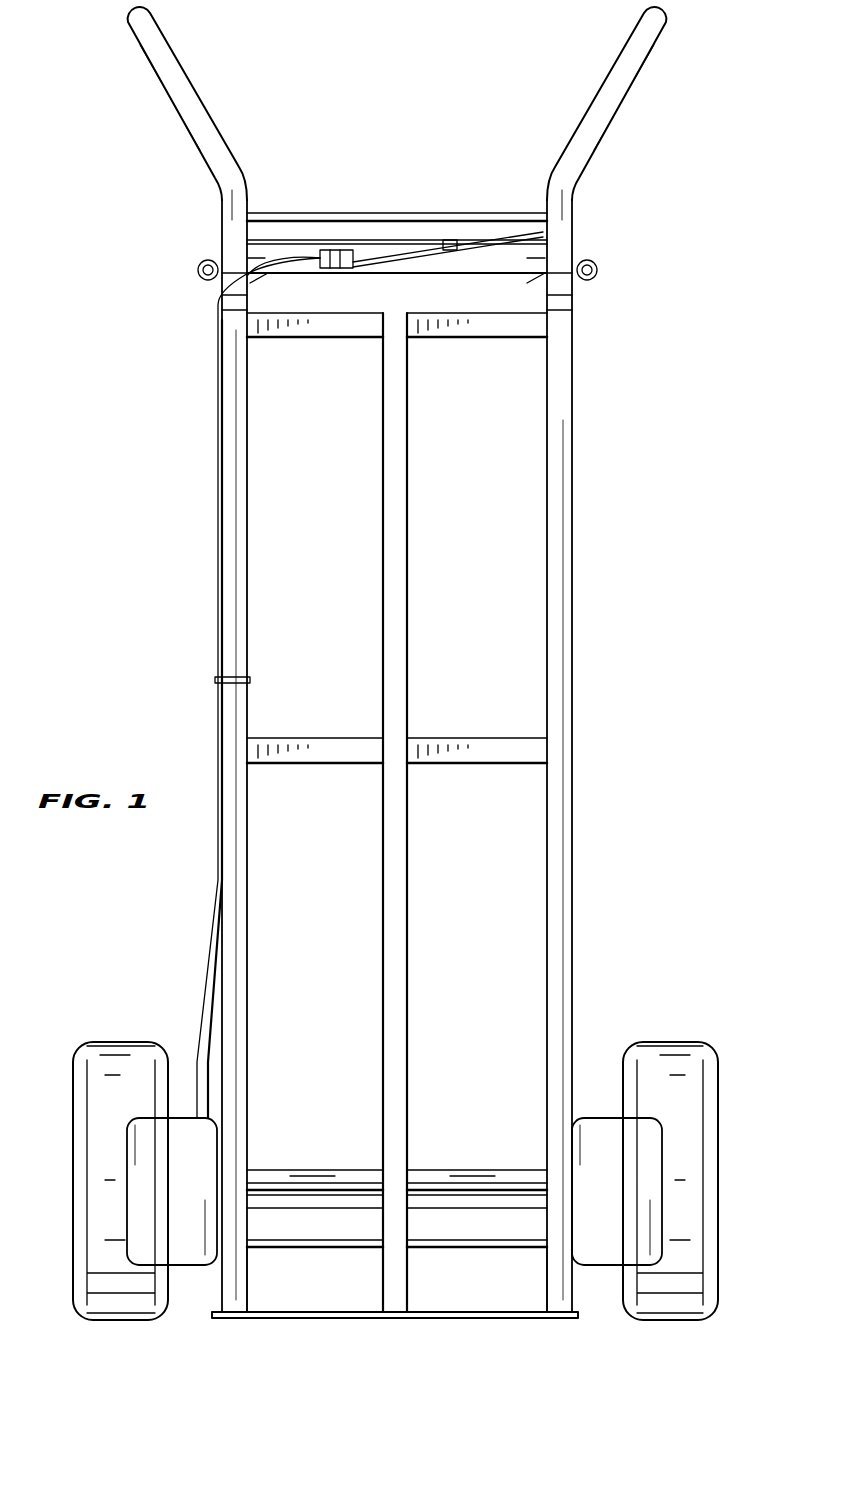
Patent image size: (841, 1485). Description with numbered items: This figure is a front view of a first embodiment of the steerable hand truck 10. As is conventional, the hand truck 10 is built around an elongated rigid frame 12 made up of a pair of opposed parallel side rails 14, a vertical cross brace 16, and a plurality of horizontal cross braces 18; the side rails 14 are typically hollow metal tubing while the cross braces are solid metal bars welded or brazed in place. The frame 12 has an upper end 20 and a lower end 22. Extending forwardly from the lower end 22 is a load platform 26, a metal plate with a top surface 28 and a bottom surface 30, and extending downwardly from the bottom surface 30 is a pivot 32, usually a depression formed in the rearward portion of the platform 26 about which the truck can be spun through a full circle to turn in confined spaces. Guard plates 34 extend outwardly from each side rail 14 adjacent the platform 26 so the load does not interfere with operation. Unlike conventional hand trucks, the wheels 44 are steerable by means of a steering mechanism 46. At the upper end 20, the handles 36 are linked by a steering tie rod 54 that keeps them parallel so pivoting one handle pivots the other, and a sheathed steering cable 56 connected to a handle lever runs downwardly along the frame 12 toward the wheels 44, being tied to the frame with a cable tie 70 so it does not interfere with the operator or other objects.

The steerable hand truck 10 is at (695, 453).
The elongated rigid frame 12 is at (630, 780).
The side rails 14 is at (563, 548).
The vertical cross brace 16 is at (395, 541).
The horizontal cross braces 18 is at (470, 338).
The upper end 20 is at (156, 298).
The lower end 22 is at (260, 1166).
The load platform 26 is at (429, 1308).
The top surface 28 is at (320, 1312).
The bottom surface 30 is at (250, 1320).
The pivot 32 is at (378, 1325).
The guard plates 34 is at (184, 1215).
The handles 36 is at (240, 172).
The wheels 44 is at (111, 1038).
The steering mechanism 46 is at (183, 958).
The steering tie rod 54 is at (369, 213).
The sheathed steering cable 56 is at (193, 1022).
The cable tie 70 is at (250, 680).